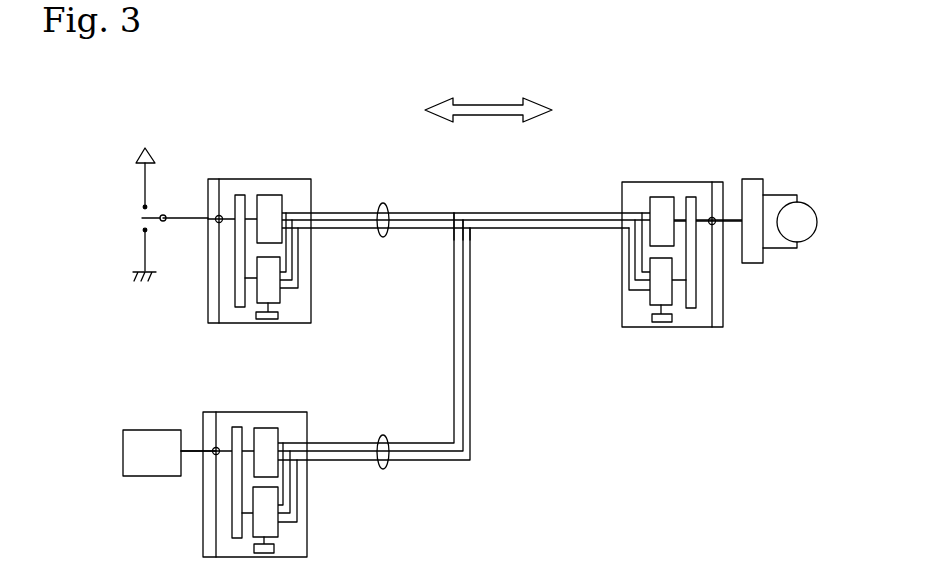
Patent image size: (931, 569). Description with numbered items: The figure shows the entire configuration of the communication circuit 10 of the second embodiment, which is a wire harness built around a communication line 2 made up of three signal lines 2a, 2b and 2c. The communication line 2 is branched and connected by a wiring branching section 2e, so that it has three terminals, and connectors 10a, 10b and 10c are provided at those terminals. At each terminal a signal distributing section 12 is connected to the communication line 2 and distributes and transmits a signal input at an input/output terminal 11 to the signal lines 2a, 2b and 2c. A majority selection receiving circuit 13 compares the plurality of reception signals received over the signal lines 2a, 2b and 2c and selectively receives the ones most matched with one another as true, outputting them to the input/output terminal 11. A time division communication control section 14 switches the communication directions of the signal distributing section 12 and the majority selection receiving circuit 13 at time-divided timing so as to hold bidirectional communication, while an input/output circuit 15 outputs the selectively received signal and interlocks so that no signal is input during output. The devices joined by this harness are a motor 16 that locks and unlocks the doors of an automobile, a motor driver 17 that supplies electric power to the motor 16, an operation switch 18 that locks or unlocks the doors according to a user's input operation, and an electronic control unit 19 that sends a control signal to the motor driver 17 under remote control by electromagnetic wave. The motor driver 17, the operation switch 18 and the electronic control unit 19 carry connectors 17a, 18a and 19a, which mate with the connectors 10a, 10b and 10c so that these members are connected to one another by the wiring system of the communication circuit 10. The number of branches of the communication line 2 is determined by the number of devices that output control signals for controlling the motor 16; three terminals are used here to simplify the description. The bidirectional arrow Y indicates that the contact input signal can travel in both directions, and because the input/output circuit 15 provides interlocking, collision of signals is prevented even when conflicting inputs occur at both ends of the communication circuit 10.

The communication line 2 is at (385, 203).
The signal line 2a is at (525, 212).
The signal line 2b is at (548, 220).
The signal line 2c is at (575, 228).
The wiring branching section 2e is at (448, 193).
The communication circuit 10 is at (546, 392).
The connector 10a is at (311, 185).
The connector 10b is at (307, 417).
The connector 10c is at (622, 265).
The input/output terminal 11 is at (219, 214).
The signal distributing section 12 is at (268, 195).
The majority selection receiving circuit 13 is at (282, 298).
The time division communication control section 14 is at (271, 568).
The input/output circuit 15 is at (240, 195).
The motor 16 is at (806, 206).
The motor driver 17 is at (751, 179).
The connector 17a is at (723, 318).
The operation switch 18 is at (140, 216).
The connector 18a is at (208, 196).
The electronic control unit 19 is at (140, 430).
The connector 19a is at (206, 434).
The bidirectional arrow Y is at (490, 103).